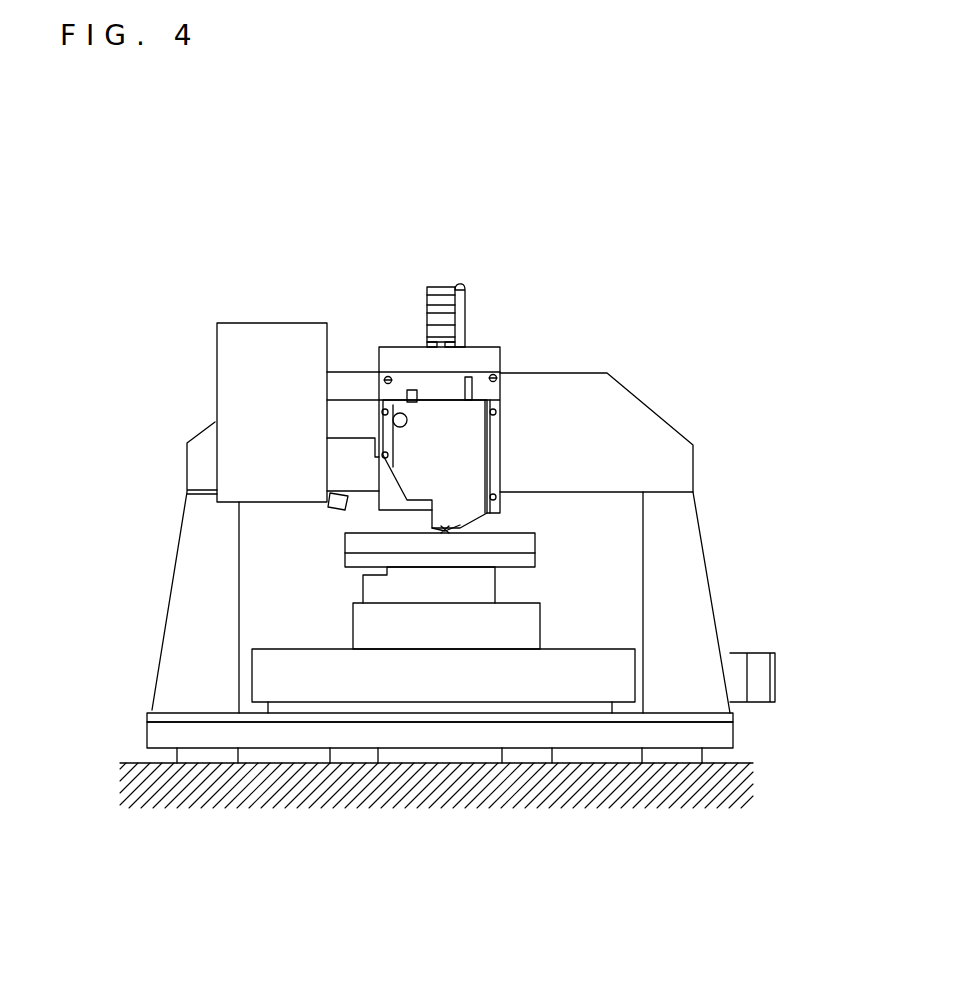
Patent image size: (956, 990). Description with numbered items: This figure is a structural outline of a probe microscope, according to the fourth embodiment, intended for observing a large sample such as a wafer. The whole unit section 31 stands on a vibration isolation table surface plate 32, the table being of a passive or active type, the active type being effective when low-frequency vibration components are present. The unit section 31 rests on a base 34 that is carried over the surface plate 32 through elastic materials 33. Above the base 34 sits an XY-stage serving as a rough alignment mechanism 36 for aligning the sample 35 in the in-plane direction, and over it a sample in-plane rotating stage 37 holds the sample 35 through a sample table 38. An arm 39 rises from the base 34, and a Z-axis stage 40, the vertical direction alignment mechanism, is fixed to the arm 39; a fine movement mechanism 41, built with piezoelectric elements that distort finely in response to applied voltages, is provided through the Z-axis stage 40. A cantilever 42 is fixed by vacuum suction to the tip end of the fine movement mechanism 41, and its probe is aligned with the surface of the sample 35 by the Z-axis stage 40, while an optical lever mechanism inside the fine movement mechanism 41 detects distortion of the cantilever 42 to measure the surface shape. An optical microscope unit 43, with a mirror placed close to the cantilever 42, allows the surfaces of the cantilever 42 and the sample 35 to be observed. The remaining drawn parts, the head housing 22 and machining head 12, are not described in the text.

The unit section 31 is at (277, 186).
The arm 39 is at (200, 670).
The optical microscope unit 43 is at (248, 372).
The Z-axis stage 40 is at (447, 312).
The head housing 22 is at (383, 415).
The fine movement mechanism 41 is at (483, 377).
The machining head 12 is at (462, 492).
The cantilever 42 is at (445, 530).
The sample 35 is at (507, 542).
The sample table 38 is at (535, 563).
The sample in-plane rotating stage 37 is at (483, 590).
The rough alignment mechanism 36 is at (553, 660).
The base 34 is at (697, 733).
The elastic materials 33 is at (672, 758).
The vibration isolation table surface plate 32 is at (533, 806).